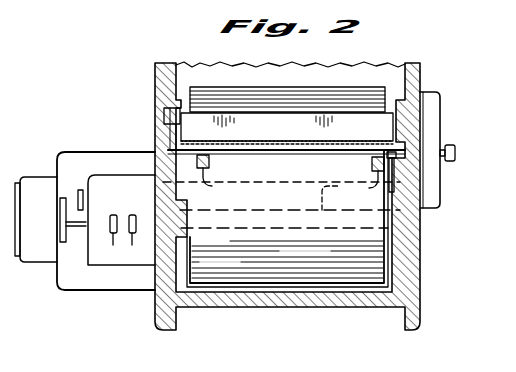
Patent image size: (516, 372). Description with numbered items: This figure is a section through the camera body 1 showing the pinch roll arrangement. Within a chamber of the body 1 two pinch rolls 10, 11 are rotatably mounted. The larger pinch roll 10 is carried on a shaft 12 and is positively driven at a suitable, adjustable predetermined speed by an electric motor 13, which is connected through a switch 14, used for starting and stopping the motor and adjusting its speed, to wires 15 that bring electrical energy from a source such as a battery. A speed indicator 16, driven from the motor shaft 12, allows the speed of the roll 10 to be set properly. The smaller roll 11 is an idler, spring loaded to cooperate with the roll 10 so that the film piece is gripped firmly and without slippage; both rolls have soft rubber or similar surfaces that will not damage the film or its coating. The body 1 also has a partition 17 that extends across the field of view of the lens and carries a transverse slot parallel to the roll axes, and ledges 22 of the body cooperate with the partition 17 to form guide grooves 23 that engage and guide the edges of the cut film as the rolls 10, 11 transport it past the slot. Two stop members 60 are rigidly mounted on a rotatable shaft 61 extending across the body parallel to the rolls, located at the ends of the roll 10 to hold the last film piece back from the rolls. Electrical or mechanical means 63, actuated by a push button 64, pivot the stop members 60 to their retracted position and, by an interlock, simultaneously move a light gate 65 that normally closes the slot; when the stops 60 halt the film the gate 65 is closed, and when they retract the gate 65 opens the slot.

The body 1 is at (434, 258).
The pinch roll 10 is at (367, 274).
The pinch roll 11 is at (200, 85).
The shaft 12 is at (313, 195).
The electric motor 13 is at (110, 291).
The switch 14 is at (95, 265).
The wires 15 is at (131, 215).
The speed indicator 16 is at (43, 263).
The partition 17 is at (303, 147).
The ledges 22 is at (210, 166).
The guide grooves 23 is at (203, 172).
The stop members 60 is at (158, 196).
The rotatable shaft 61 is at (328, 209).
The electrical or mechanical means 63 is at (431, 93).
The push button 64 is at (453, 146).
The light gate 65 is at (262, 140).